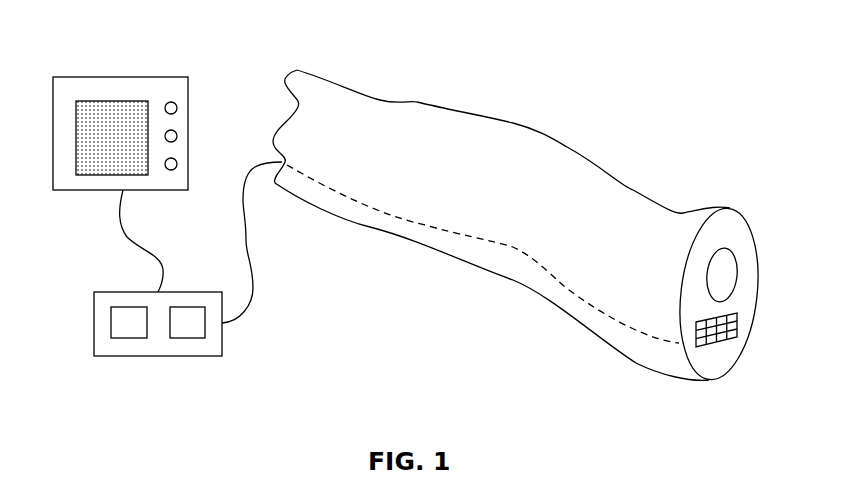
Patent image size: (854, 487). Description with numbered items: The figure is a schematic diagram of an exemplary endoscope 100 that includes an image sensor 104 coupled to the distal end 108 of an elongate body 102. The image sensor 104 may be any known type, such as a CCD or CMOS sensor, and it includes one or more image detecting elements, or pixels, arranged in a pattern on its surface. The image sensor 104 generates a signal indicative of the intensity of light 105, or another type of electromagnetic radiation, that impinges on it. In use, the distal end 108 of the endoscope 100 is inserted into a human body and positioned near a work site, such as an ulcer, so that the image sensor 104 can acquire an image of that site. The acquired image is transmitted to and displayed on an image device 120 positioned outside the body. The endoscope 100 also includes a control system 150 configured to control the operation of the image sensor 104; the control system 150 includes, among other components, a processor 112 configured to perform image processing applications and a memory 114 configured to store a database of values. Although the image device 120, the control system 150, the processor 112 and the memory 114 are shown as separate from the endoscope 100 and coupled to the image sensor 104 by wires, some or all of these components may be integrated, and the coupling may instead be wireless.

The endoscope 100 is at (551, 220).
The elongate body 102 is at (413, 118).
The image sensor 104 is at (729, 335).
The light 105 is at (748, 306).
The distal end 108 is at (768, 211).
The processor 112 is at (123, 325).
The memory 114 is at (198, 329).
The image device 120 is at (117, 77).
The control system 150 is at (163, 353).